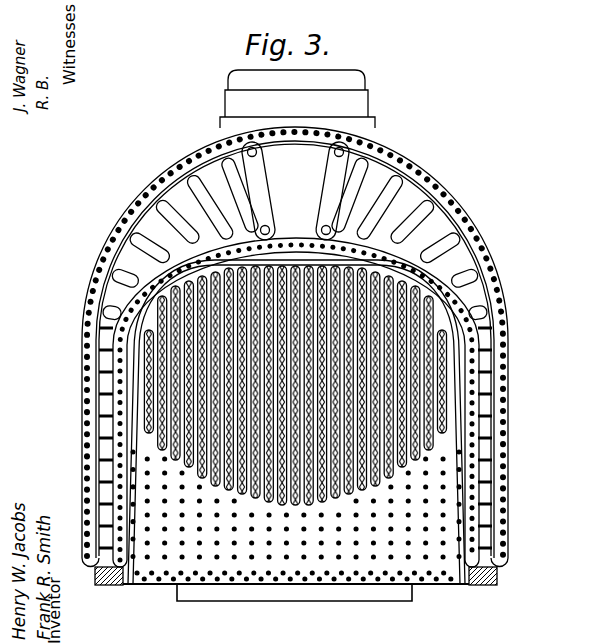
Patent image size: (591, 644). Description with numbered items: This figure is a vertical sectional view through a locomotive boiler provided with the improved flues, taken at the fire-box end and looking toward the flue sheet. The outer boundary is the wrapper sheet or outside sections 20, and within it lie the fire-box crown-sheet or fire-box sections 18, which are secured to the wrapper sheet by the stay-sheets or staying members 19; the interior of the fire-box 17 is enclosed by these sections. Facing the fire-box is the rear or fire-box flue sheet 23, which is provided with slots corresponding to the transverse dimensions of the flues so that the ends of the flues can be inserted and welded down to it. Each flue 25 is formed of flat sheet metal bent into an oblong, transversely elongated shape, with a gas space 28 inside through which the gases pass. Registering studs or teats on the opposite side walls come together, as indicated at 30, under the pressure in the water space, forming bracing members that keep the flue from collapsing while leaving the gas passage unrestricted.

The fire-box interior 17 is at (448, 445).
The fire-box crown-sheet 18 is at (400, 272).
The stay-sheets 19 is at (380, 162).
The wrapper sheet 20 is at (447, 192).
The rear flue sheet 23 is at (453, 355).
The flue 25 is at (452, 372).
The gas space 28 is at (430, 410).
The registering studs coming together 30 is at (153, 430).